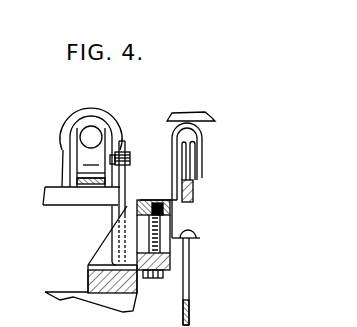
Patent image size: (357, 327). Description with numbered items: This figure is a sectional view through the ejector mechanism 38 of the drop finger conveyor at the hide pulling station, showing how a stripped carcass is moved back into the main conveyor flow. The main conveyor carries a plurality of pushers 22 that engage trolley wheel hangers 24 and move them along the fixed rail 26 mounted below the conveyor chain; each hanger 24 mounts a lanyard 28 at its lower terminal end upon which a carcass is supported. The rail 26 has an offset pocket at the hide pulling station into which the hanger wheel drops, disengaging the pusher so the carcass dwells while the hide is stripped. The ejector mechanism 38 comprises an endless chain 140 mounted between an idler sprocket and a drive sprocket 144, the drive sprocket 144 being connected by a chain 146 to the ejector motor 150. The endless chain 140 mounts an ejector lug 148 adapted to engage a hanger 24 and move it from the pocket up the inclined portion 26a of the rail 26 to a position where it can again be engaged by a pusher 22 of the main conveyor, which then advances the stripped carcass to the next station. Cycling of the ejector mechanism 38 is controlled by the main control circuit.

The pusher 22 is at (201, 111).
The trolley wheel hanger 24 is at (203, 146).
The fixed rail 26 is at (194, 198).
The inclined portion 26a is at (193, 190).
The lanyard 28 is at (190, 313).
The ejector mechanism 38 is at (122, 117).
The endless chain 140 is at (162, 273).
The drive sprocket 144 is at (161, 247).
The chain 146 is at (128, 174).
The ejector lug 148 is at (157, 200).
The ejector motor 150 is at (91, 108).